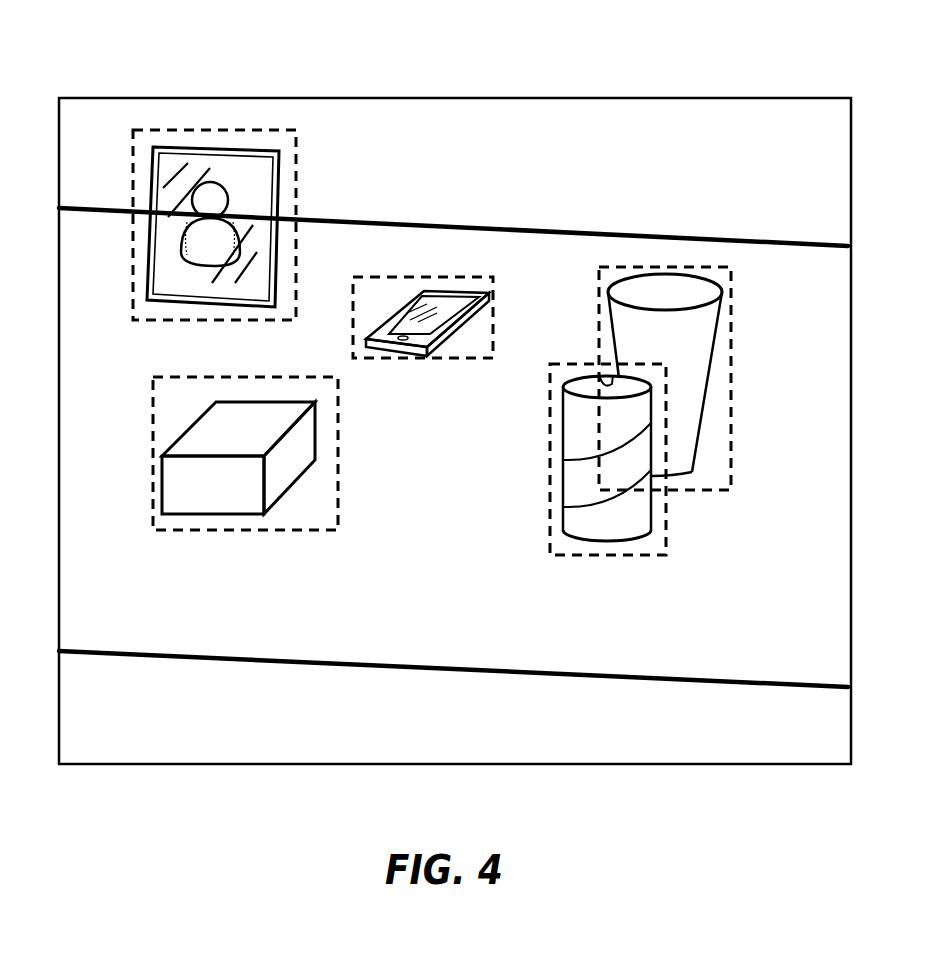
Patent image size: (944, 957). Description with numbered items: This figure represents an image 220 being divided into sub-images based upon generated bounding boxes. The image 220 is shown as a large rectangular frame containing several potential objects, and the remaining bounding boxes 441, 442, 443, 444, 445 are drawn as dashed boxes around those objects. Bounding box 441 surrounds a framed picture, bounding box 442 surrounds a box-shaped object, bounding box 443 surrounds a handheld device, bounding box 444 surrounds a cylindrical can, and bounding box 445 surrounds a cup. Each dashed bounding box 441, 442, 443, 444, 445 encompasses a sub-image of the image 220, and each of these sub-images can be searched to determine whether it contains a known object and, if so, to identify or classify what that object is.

The image 220 is at (430, 80).
The bounding box 441 is at (290, 183).
The bounding box 442 is at (314, 500).
The bounding box 443 is at (470, 348).
The bounding box 444 is at (553, 538).
The bounding box 445 is at (606, 343).